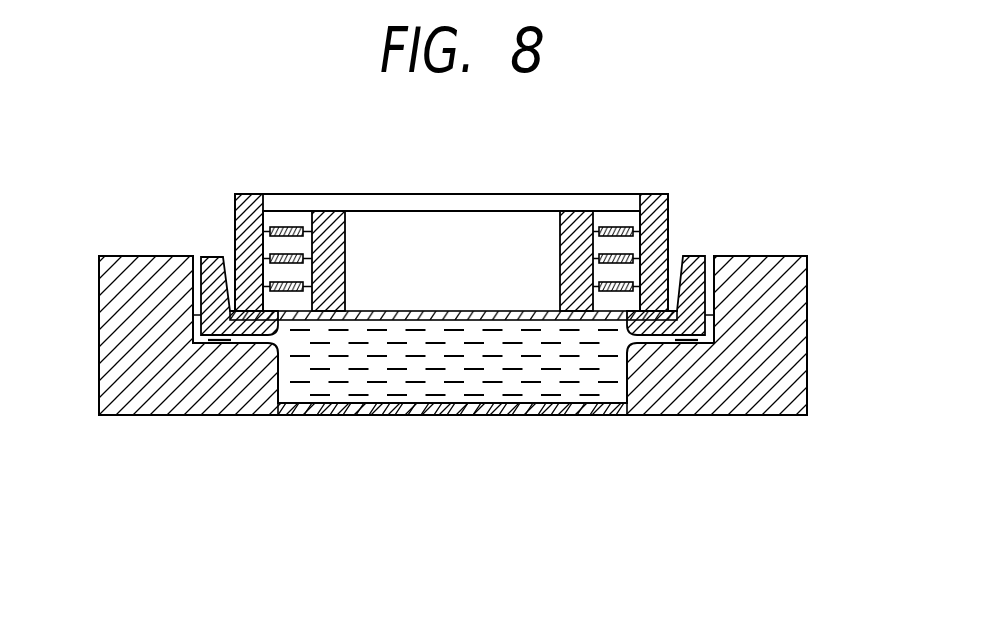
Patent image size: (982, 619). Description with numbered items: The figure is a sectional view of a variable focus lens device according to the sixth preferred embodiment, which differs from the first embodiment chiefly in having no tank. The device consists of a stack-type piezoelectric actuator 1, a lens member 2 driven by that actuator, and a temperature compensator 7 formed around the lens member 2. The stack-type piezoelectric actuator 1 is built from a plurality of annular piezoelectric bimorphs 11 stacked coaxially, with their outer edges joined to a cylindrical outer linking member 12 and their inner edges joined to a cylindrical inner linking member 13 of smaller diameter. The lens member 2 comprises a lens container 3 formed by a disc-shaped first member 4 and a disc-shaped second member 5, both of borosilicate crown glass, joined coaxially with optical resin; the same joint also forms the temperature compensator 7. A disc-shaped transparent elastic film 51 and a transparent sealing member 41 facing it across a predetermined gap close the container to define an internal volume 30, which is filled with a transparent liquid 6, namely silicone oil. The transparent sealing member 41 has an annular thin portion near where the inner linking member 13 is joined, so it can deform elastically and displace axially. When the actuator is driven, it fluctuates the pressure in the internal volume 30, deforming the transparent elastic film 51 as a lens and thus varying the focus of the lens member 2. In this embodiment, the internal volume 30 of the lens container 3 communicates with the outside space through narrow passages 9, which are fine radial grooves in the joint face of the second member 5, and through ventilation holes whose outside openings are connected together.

The stack-type piezoelectric actuator 1 is at (607, 173).
The lens member 2 is at (440, 422).
The lens container 3 is at (400, 415).
The first member 4 is at (693, 254).
The second member 5 is at (807, 325).
The transparent liquid 6 is at (548, 376).
The temperature compensator 7 is at (258, 486).
The narrow passages 9 is at (247, 343).
The piezoelectric bimorphs 11 is at (284, 227).
The outer linking member 12 is at (237, 215).
The inner linking member 13 is at (346, 247).
The internal volume 30 is at (352, 375).
The transparent sealing member 41 is at (473, 311).
The transparent elastic film 51 is at (483, 408).